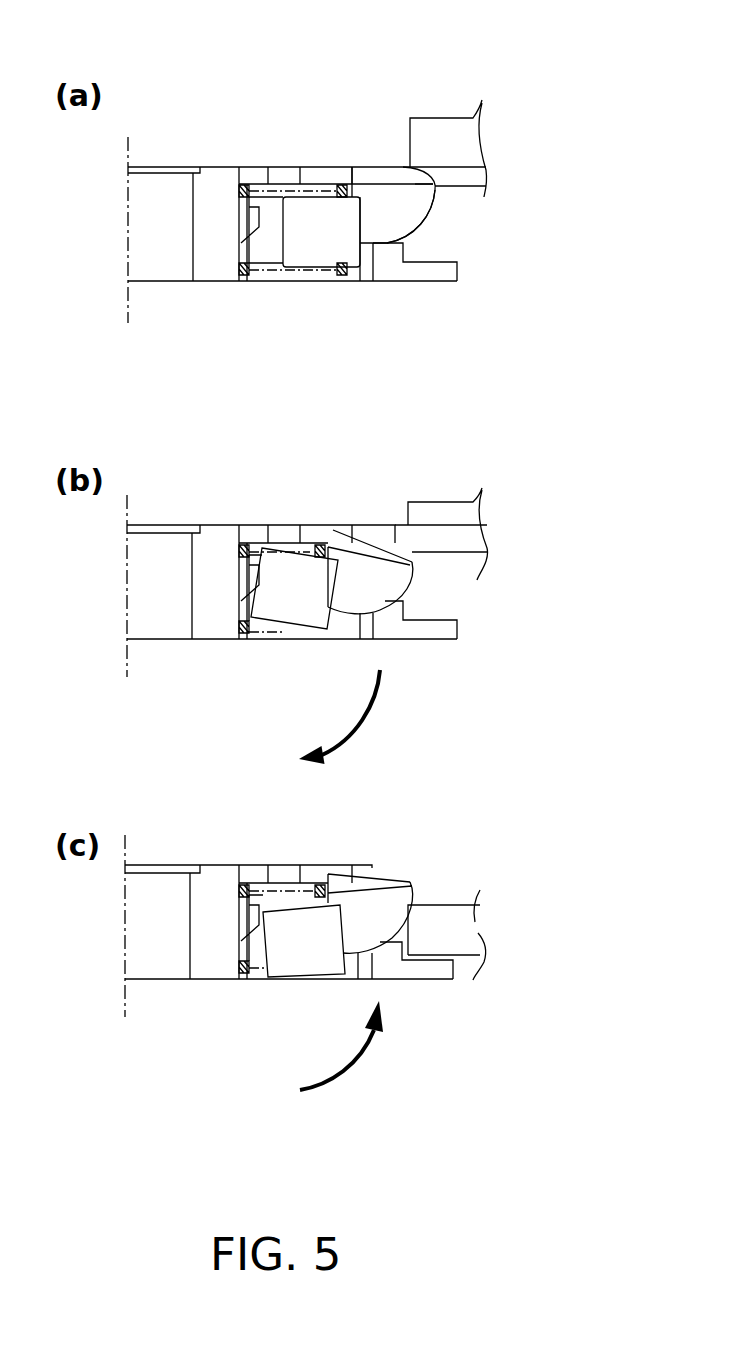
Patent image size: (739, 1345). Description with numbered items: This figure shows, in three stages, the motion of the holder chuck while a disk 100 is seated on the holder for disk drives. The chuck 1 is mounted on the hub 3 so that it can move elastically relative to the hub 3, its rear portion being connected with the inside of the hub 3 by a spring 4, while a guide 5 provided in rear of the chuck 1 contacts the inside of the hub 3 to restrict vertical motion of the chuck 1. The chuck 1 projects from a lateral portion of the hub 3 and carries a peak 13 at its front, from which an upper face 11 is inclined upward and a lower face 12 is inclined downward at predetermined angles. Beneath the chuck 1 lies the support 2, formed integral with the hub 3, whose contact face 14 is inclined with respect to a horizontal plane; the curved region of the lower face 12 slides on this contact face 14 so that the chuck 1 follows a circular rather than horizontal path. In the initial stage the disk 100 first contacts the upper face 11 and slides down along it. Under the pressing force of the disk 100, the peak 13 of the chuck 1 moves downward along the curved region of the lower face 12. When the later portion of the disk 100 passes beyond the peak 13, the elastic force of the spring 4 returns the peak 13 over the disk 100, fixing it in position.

The chuck 1 is at (385, 197).
The support 2 is at (443, 273).
The hub 3 is at (327, 175).
The spring 4 is at (243, 265).
The guide 5 is at (318, 256).
The upper face 11 is at (399, 164).
The lower face 12 is at (434, 217).
The peak 13 is at (449, 187).
The contact face 14 is at (394, 259).
The disk 100 is at (447, 130).